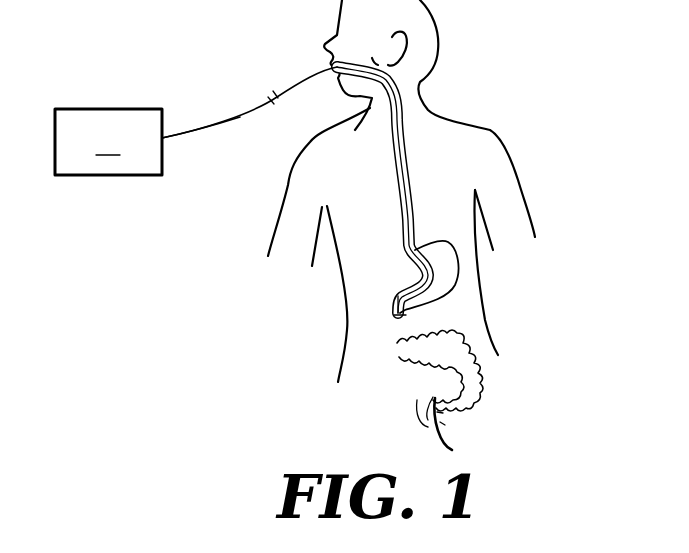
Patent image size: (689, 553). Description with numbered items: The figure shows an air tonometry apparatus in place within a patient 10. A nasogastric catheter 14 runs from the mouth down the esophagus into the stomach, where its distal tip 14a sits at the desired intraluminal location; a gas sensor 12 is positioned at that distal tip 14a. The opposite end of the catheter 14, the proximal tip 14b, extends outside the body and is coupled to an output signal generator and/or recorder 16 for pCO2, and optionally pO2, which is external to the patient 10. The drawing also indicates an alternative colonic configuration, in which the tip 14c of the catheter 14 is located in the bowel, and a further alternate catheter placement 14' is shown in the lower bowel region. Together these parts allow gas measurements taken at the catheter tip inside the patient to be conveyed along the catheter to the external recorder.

The patient 10 is at (467, 133).
The gas sensor 12 is at (386, 303).
The nasogastric catheter 14 is at (295, 178).
The distal tip 14a is at (417, 311).
The proximal tip 14b is at (163, 137).
The tip of catheter 14c is at (428, 400).
The alternate tube placement 14' is at (469, 424).
The output signal generator and/or recorder 16 is at (108, 142).